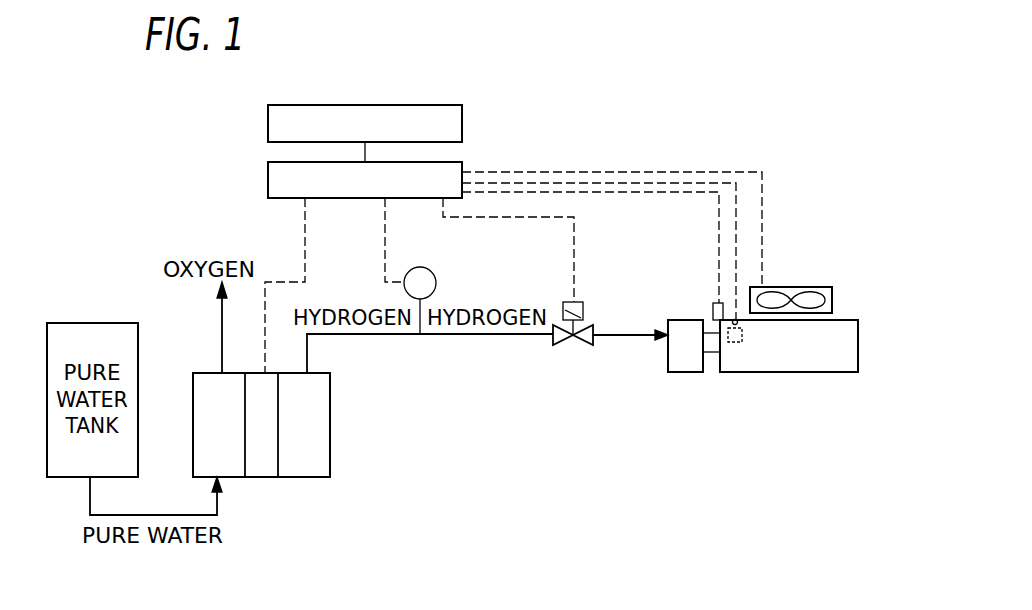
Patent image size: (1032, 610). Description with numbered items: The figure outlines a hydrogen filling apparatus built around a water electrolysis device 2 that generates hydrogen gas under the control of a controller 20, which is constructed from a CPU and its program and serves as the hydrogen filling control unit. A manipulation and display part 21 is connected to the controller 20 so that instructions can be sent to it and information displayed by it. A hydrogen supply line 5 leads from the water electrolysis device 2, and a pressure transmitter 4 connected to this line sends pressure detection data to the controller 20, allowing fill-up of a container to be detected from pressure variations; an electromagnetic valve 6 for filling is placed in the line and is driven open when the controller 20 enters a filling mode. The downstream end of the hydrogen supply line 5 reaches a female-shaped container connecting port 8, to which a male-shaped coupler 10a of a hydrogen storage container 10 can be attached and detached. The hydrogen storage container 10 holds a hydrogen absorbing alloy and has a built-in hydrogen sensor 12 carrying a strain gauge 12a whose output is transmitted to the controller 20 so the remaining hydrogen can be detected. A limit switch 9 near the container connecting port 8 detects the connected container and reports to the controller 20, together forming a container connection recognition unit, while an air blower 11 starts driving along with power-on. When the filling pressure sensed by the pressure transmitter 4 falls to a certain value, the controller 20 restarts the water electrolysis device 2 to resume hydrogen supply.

The water electrolysis device 2 is at (268, 503).
The pressure transmitter 4 is at (433, 272).
The hydrogen supply line 5 is at (612, 334).
The electromagnetic valve 6 is at (568, 345).
The container connecting port 8 is at (683, 372).
The limit switch 9 is at (713, 310).
The hydrogen storage container 10 is at (858, 345).
The coupler 10a is at (712, 352).
The air blower 11 is at (800, 287).
The hydrogen sensor 12 is at (742, 342).
The strain gauge 12a is at (744, 324).
The controller 20 is at (268, 180).
The manipulation and display part 21 is at (268, 122).